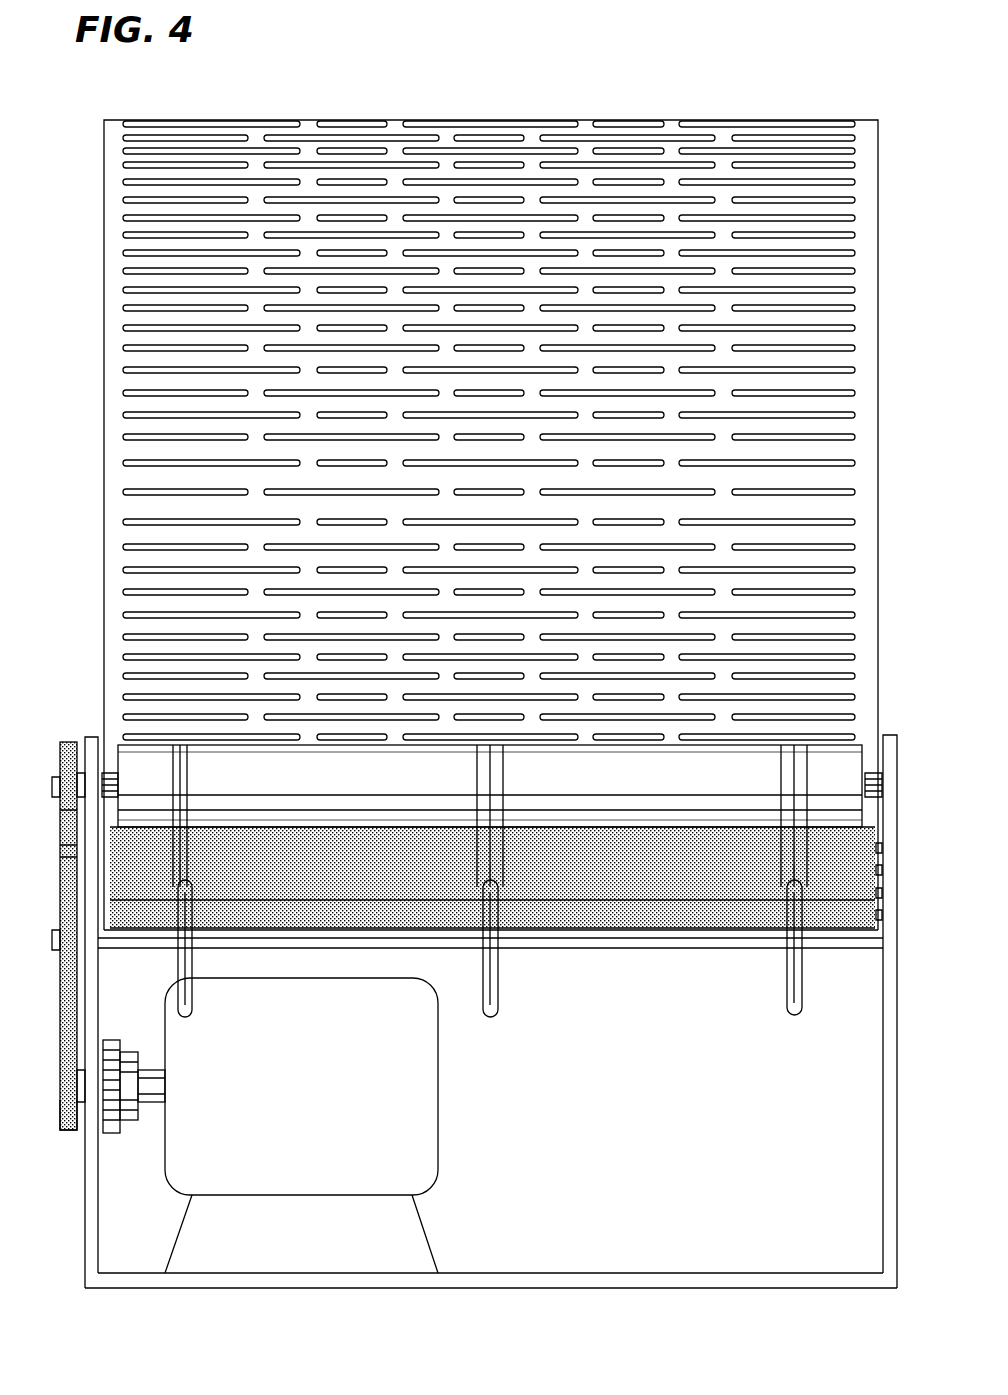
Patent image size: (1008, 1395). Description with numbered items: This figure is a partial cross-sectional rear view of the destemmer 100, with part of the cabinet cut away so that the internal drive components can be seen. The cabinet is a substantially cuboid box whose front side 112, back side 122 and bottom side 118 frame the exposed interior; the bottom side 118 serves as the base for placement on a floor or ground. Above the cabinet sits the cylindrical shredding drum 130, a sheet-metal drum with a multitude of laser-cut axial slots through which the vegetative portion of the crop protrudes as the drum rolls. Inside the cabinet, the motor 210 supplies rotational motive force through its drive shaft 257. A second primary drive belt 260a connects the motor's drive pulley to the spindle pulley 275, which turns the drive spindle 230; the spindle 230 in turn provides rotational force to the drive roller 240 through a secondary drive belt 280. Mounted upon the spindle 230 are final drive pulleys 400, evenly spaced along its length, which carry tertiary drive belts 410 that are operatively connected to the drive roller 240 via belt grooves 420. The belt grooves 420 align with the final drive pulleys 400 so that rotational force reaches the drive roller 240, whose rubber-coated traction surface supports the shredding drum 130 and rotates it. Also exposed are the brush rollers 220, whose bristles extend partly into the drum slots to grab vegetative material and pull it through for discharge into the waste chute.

The destemmer 100 is at (352, 92).
The shredding drum 130 is at (118, 187).
The drive roller 240 is at (135, 762).
The brush rollers 220 is at (840, 885).
The drive spindle 230 is at (652, 948).
The front side 112 is at (93, 1262).
The back side 122 is at (905, 1290).
The bottom side 118 is at (677, 1292).
The spindle pulley 275 is at (60, 800).
The secondary drive belt 280 is at (60, 775).
The belt grooves 420 is at (175, 770).
The tertiary drive belts 410 is at (190, 863).
The final drive pulleys 400 is at (195, 965).
The motor 210 is at (440, 1133).
The drive shaft 257 is at (150, 1088).
The second primary drive belt 260a is at (60, 1118).